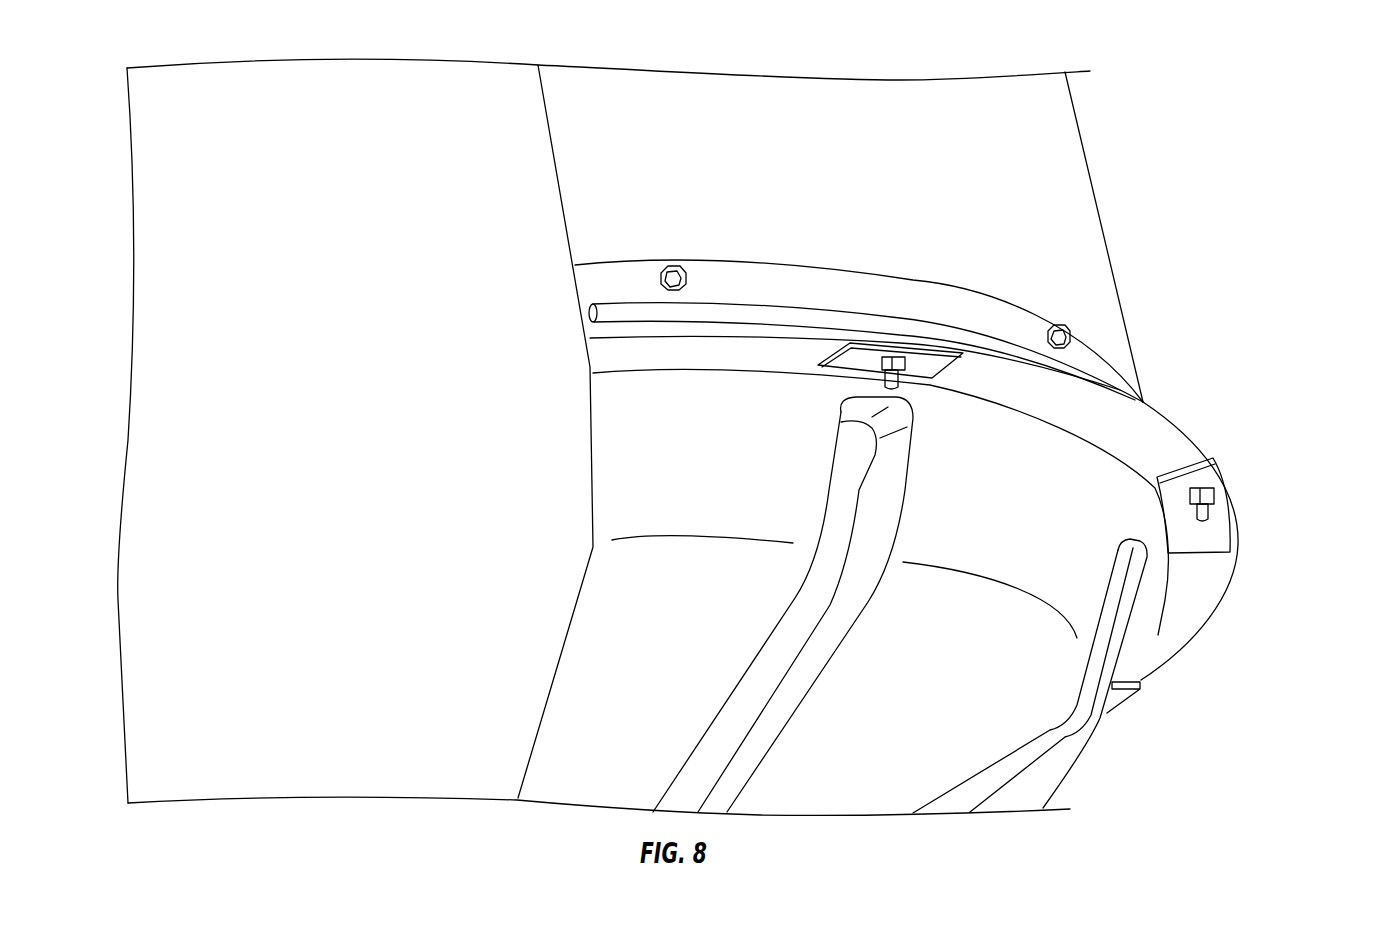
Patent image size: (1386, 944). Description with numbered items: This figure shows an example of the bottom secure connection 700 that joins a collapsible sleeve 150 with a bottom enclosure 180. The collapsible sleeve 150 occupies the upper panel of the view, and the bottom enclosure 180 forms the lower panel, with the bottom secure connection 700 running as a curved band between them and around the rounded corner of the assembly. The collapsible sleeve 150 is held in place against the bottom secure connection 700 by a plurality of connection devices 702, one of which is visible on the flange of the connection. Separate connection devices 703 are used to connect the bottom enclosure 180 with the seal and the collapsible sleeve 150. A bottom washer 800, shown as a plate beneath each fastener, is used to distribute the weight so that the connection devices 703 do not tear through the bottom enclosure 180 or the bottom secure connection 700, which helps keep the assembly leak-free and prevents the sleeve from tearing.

The collapsible sleeve 150 is at (822, 184).
The bottom enclosure 180 is at (741, 463).
The bottom secure connection 700 is at (1303, 315).
The connection devices 702 is at (1062, 322).
The connection devices 703 is at (1213, 492).
The bottom washer 800 is at (932, 363).